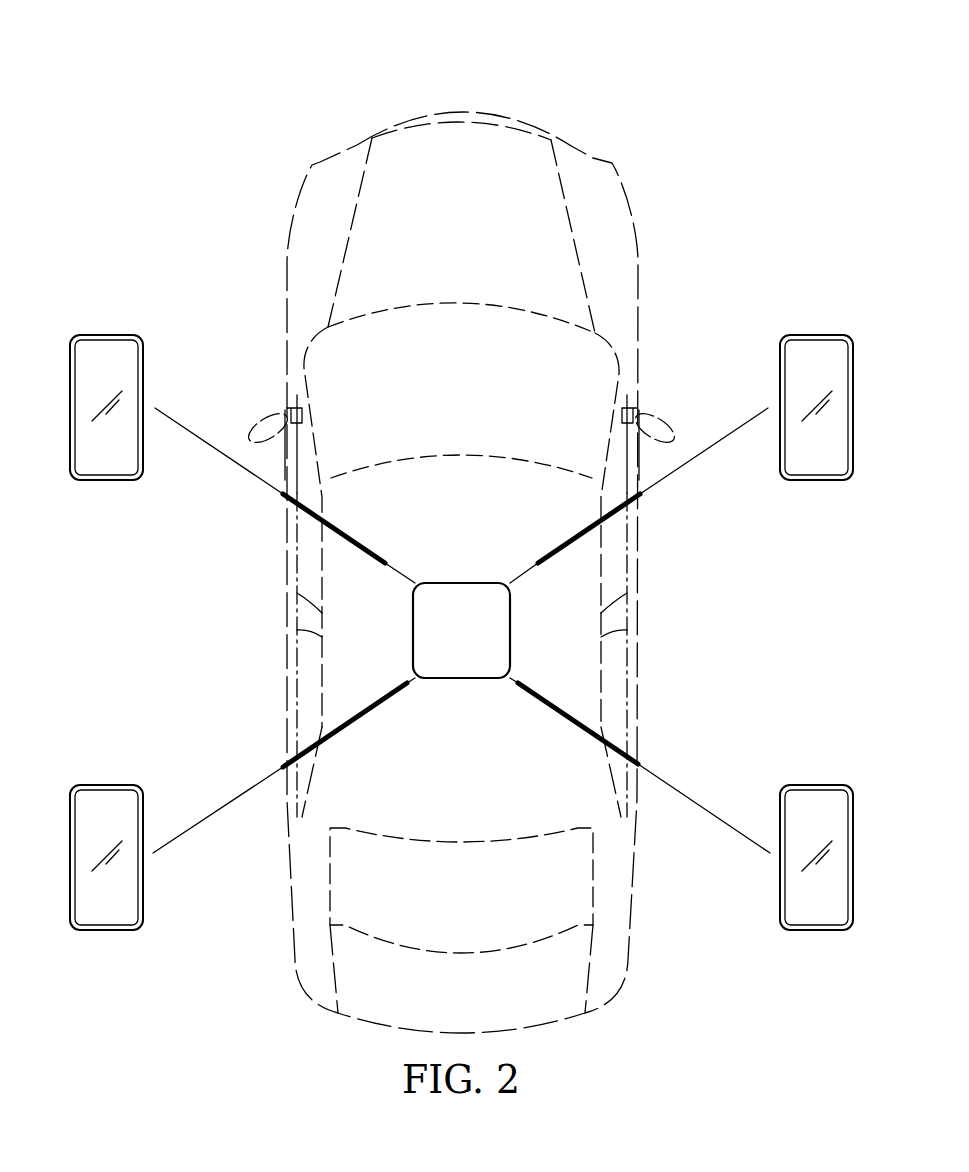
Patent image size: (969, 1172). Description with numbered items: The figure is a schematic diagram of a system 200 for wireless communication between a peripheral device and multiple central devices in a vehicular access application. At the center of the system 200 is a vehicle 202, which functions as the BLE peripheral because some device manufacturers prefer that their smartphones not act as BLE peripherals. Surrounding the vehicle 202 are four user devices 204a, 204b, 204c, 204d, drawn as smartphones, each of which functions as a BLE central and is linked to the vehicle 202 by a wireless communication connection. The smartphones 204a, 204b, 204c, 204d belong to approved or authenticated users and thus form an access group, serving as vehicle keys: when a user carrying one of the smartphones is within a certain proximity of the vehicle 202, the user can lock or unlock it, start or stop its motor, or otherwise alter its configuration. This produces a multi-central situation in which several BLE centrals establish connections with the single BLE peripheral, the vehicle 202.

The system 200 is at (275, 71).
The vehicle 202 is at (484, 648).
The user device 204a is at (107, 335).
The user device 204b is at (105, 930).
The user device 204c is at (813, 335).
The user device 204d is at (815, 928).